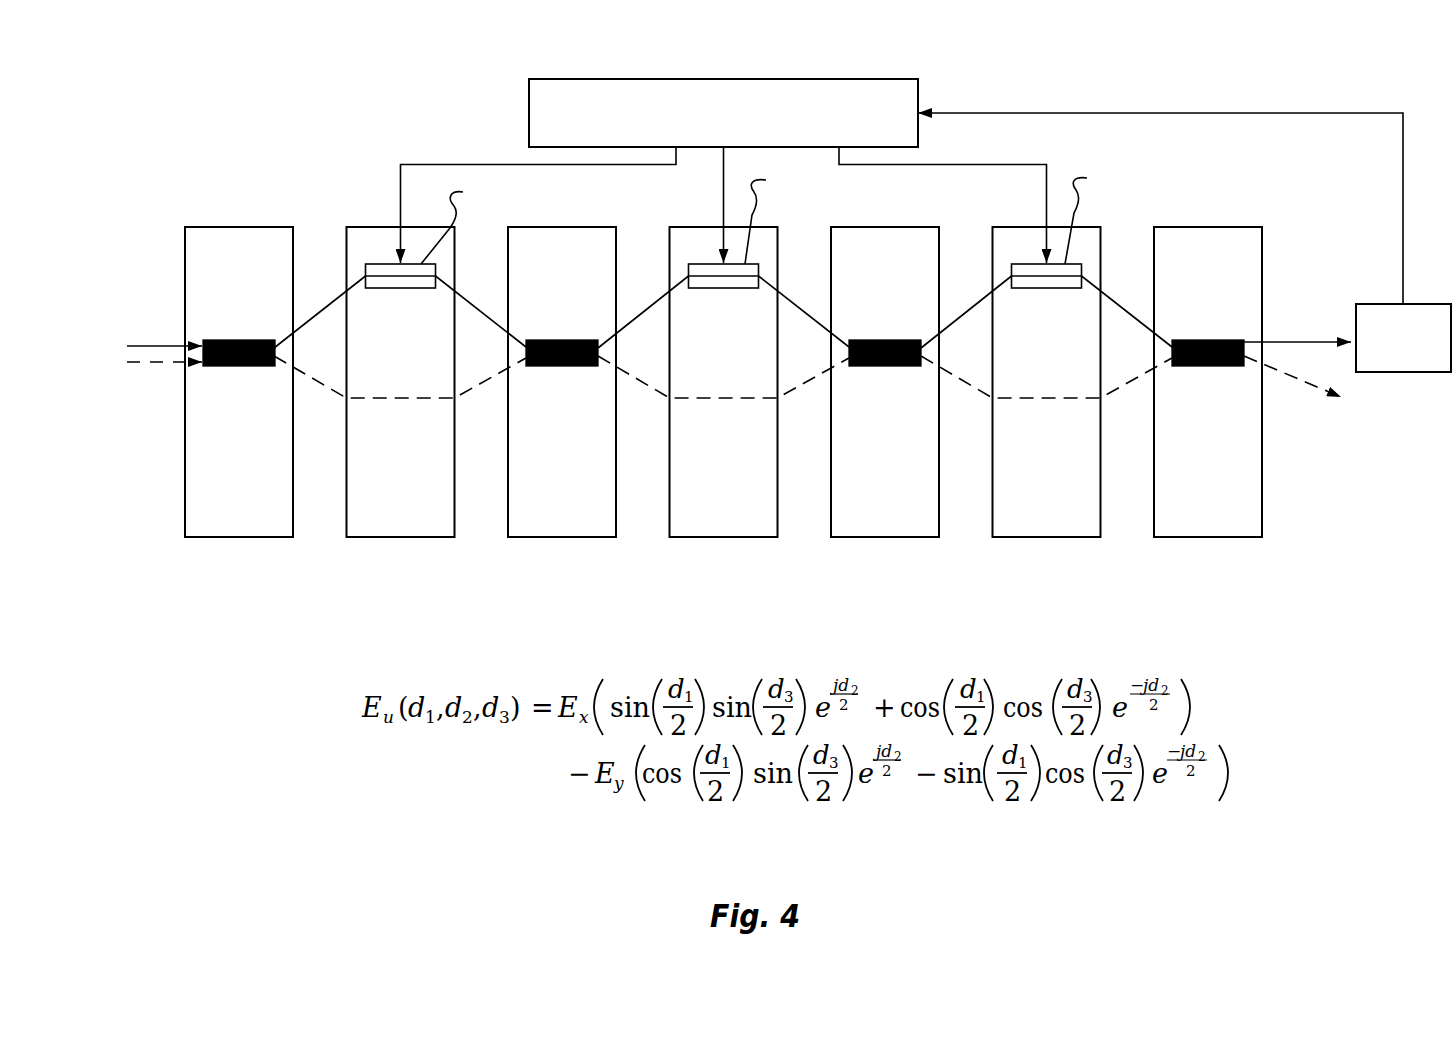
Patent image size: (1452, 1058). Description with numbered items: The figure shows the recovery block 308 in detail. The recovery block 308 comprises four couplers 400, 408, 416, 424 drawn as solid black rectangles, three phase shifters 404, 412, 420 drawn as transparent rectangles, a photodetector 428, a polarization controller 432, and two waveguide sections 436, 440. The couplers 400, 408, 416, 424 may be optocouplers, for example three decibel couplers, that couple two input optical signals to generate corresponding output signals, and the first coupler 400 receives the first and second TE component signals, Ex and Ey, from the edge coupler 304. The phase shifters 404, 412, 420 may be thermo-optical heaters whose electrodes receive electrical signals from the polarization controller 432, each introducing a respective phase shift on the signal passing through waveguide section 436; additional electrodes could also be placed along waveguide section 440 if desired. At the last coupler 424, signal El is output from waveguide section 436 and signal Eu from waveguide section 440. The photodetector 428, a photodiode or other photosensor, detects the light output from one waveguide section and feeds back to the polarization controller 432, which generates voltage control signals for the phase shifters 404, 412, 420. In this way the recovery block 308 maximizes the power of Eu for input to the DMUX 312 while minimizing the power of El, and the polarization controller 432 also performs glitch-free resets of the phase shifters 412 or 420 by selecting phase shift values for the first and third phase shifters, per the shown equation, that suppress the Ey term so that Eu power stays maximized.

The recovery block 308 is at (1097, 72).
The edge coupler 304 is at (143, 343).
The DMUX 312 is at (1314, 396).
The coupler 400 is at (239, 382).
The phase shifter 404 is at (418, 357).
The coupler 408 is at (562, 382).
The phase shifter 412 is at (732, 353).
The coupler 416 is at (885, 382).
The phase shifter 420 is at (1054, 352).
The coupler 424 is at (1208, 382).
The photodetector 428 is at (1347, 336).
The polarization controller 432 is at (902, 191).
The waveguide section 436 is at (315, 285).
The waveguide section 440 is at (316, 402).